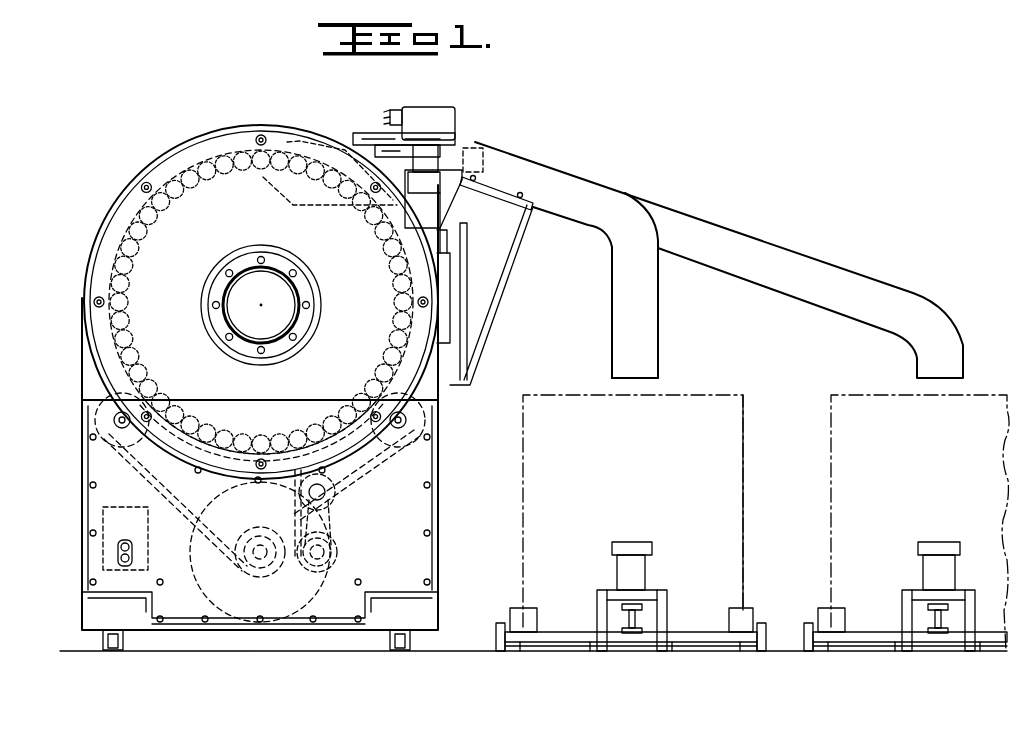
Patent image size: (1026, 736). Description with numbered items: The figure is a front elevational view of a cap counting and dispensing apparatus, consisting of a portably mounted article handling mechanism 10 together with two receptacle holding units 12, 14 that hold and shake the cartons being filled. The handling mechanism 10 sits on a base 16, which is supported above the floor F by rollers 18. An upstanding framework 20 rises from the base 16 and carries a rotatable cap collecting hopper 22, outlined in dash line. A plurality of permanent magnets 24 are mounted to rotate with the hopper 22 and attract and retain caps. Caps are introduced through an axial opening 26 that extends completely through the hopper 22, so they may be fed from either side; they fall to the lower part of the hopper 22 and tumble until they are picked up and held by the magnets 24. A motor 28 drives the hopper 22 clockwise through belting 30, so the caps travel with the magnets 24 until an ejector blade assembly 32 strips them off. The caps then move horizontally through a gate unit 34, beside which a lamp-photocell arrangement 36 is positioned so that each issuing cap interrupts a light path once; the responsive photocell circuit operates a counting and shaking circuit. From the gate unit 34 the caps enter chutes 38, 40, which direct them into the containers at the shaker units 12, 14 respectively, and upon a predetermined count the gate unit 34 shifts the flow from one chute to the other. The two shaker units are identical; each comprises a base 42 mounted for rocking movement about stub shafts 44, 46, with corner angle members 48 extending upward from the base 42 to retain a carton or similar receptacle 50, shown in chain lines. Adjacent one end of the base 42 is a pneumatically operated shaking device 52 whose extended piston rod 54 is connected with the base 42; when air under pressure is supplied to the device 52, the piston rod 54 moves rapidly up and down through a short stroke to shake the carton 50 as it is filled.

The article handling mechanism 10 is at (76, 267).
The receptacle holding unit 12 is at (708, 380).
The receptacle holding unit 14 is at (869, 392).
The base 16 is at (200, 631).
The rollers 18 is at (108, 641).
The floor F is at (275, 652).
The upstanding framework 20 is at (82, 402).
The cap collecting hopper 22 is at (128, 228).
The permanent magnets 24 is at (199, 172).
The axial opening 26 is at (236, 288).
The motor 28 is at (332, 572).
The belting 30 is at (160, 482).
The ejector blade assembly 32 is at (262, 186).
The gate unit 34 is at (470, 106).
The lamp-photocell arrangement 36 is at (447, 158).
The chute 38 is at (652, 287).
The chute 40 is at (912, 296).
The base 42 is at (712, 646).
The stub shaft 44 is at (893, 616).
The stub shaft 46 is at (500, 630).
The corner angle members 48 is at (517, 607).
The receptacle 50 is at (745, 497).
The shaking device 52 is at (648, 570).
The piston rod 54 is at (630, 622).